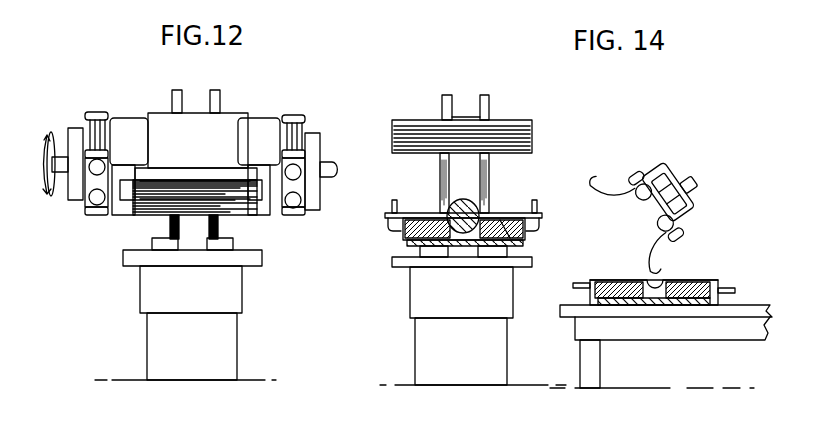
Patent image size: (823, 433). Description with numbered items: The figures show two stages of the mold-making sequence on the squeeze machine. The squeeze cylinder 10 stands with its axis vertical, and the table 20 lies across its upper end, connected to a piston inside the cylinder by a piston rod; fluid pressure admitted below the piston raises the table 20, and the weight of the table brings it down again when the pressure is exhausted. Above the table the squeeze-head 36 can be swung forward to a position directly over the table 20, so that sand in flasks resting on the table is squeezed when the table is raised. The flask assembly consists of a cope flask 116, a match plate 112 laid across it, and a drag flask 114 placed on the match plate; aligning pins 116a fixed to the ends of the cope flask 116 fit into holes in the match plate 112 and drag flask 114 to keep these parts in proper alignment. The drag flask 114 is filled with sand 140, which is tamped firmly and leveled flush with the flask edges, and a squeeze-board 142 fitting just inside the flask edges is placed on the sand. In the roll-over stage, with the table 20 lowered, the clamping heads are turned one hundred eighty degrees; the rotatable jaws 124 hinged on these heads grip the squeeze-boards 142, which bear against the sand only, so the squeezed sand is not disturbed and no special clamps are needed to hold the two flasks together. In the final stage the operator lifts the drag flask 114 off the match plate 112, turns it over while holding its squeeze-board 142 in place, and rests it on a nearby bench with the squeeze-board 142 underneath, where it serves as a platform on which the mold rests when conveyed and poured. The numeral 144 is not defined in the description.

In FIG. 12, the squeeze cylinder 10 is at (240, 342).
In FIG. 14, the squeeze cylinder 10 is at (511, 346).
In FIG. 12, the table 20 is at (134, 259).
In FIG. 14, the table 20 is at (401, 266).
In FIG. 14, the squeeze-head 36 is at (513, 122).
In FIG. 12, the match plate 112 is at (152, 198).
In FIG. 14, the match plate 112 is at (418, 218).
In FIG. 12, the drag flask 114 is at (230, 212).
In FIG. 14, the drag flask 114 is at (717, 283).
In FIG. 12, the cope flask 116 is at (135, 195).
In FIG. 14, the cope flask 116 is at (402, 238).
In FIG. 12, the aligning pins 116a is at (90, 190).
In FIG. 14, the aligning pins 116a is at (393, 209).
In FIG. 12, the rotatable jaws 124 is at (120, 118).
In FIG. 14, the rotatable jaws 124 is at (615, 192).
In FIG. 14, the sand 140 is at (507, 218).
In FIG. 14, the squeeze-board 142 is at (692, 304).
In FIG. 12, the cover block 144 is at (226, 122).
In FIG. 14, the cover block 144 is at (519, 253).